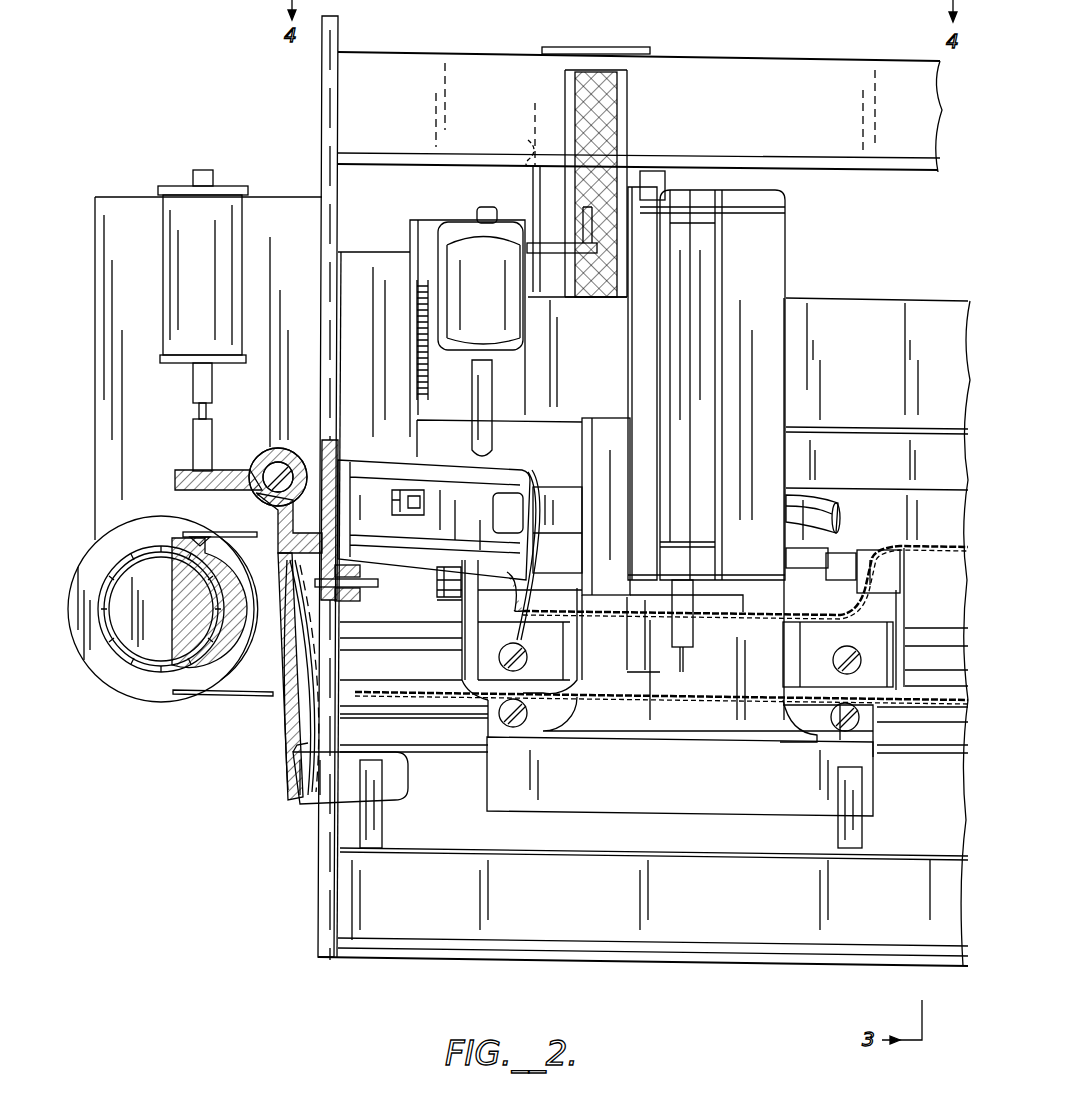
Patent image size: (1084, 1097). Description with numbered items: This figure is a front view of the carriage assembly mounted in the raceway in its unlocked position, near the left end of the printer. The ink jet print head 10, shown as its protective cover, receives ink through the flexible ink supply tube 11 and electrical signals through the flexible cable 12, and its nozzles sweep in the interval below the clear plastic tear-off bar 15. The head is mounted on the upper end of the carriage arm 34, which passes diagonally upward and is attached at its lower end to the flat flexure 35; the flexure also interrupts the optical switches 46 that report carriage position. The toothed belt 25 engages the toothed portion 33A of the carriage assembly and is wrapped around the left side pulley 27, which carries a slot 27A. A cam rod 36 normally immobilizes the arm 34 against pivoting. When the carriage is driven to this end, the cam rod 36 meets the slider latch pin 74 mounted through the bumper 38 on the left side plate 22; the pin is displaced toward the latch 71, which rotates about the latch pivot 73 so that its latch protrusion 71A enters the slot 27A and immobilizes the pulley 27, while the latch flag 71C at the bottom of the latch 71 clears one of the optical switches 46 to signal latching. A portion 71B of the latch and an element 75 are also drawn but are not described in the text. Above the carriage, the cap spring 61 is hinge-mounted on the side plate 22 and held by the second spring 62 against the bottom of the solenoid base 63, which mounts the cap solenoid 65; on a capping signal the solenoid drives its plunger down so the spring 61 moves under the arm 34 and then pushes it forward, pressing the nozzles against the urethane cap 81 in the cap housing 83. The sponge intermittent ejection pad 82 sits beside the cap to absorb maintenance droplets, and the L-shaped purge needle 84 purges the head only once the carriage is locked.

The ink jet print head 10 is at (780, 226).
The flexible ink supply tube 11 is at (826, 500).
The flexible cable 12 is at (686, 655).
The tear-off bar 15 is at (838, 84).
The left side plate 22 is at (322, 146).
The toothed belt 25 is at (893, 548).
The left side pulley 27 is at (124, 690).
The slot 27A is at (200, 535).
The toothed portion 33A is at (890, 572).
The carriage arm 34 is at (590, 462).
The flat flexure 35 is at (642, 805).
The cam rod 36 is at (434, 588).
The bumper 38 is at (362, 572).
The optical switches 46 is at (385, 830).
The cap spring 61 is at (540, 510).
The second spring 62 is at (395, 500).
The solenoid base 63 is at (358, 250).
The cap solenoid 65 is at (465, 250).
The latch 71 is at (276, 726).
The latch protrusion 71A is at (278, 677).
The lever arm horizontal portion 71B is at (175, 472).
The latch flag 71C is at (408, 778).
The latch pivot 73 is at (292, 455).
The slider latch pin 74 is at (366, 588).
The damper cylinder 75 is at (185, 272).
The cap 81 is at (616, 100).
The intermittent ejection pad 82 is at (658, 176).
The cap housing 83 is at (650, 44).
The L-shaped purge needle 84 is at (580, 213).